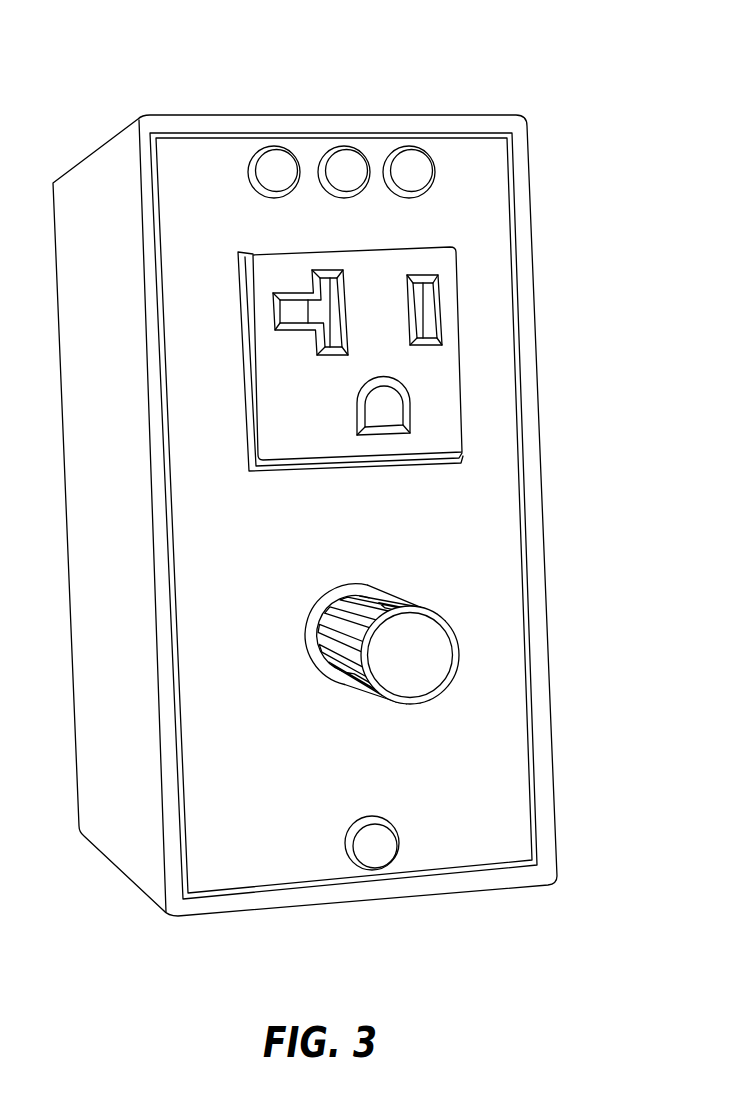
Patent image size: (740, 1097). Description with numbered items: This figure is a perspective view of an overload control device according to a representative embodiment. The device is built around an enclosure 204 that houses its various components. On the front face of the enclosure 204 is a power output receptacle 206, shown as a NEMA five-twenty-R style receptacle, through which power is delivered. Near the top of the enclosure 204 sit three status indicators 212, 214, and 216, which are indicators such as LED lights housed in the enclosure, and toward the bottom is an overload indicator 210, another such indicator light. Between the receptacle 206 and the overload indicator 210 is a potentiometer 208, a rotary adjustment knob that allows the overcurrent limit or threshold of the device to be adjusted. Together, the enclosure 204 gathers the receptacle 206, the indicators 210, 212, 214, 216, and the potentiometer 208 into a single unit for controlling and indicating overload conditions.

The enclosure 204 is at (542, 405).
The power output receptacle 206 is at (443, 365).
The potentiometer 208 is at (422, 645).
The overload indicator 210 is at (383, 853).
The status indicator 212 is at (272, 160).
The status indicator 214 is at (347, 163).
The status indicator 216 is at (422, 165).